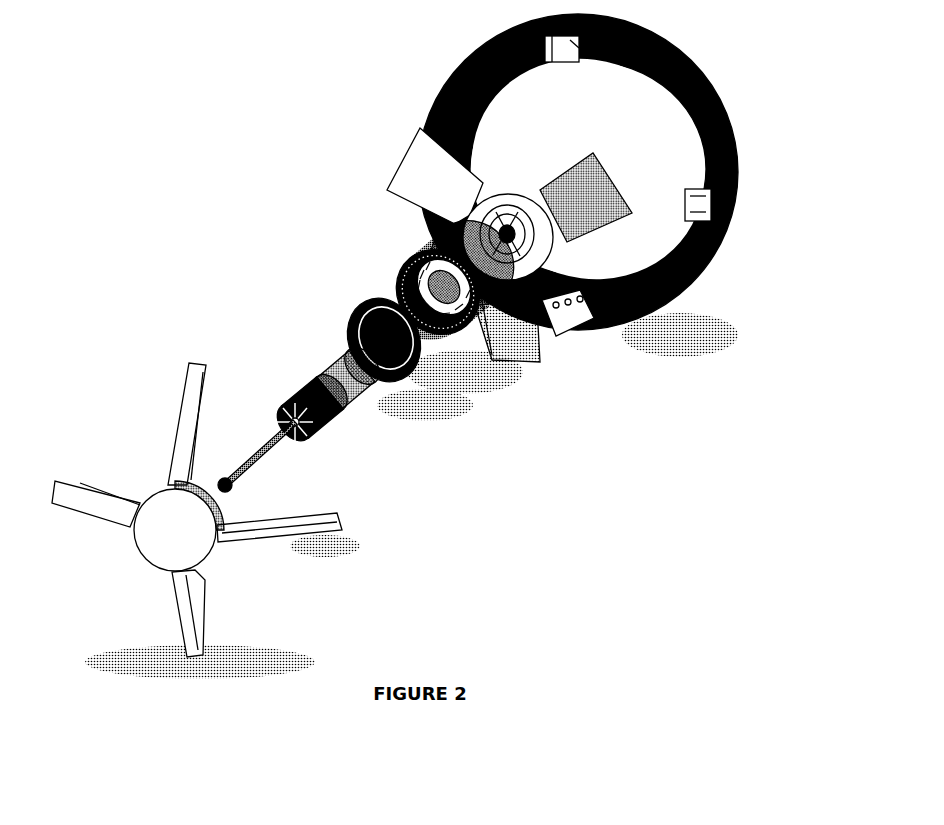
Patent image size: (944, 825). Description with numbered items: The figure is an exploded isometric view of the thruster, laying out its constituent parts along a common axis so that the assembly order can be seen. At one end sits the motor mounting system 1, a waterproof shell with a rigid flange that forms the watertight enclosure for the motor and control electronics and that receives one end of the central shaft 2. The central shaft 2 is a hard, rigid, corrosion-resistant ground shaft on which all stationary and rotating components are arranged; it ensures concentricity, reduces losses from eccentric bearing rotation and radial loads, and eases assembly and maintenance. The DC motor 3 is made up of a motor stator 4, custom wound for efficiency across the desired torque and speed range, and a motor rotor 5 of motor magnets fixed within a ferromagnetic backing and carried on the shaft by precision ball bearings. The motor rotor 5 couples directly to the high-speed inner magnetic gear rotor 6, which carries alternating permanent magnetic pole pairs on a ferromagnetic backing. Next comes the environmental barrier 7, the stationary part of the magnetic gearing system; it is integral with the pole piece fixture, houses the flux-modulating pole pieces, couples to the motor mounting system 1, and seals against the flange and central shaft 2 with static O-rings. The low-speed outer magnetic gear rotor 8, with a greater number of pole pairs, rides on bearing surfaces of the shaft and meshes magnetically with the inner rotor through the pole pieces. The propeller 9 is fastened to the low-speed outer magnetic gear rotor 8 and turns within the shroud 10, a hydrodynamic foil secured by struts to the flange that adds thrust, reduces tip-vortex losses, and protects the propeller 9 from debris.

The motor mounting system 1 is at (163, 483).
The central shaft 2 is at (258, 450).
The DC motor 3 is at (392, 333).
The motor stator 4 is at (289, 393).
The motor rotor 5 is at (320, 375).
The high-speed inner magnetic gear rotor 6 is at (338, 350).
The environmental barrier 7 is at (390, 297).
The low-speed outer magnetic gear rotor 8 is at (507, 340).
The propeller 9 is at (588, 220).
The shroud 10 is at (682, 283).